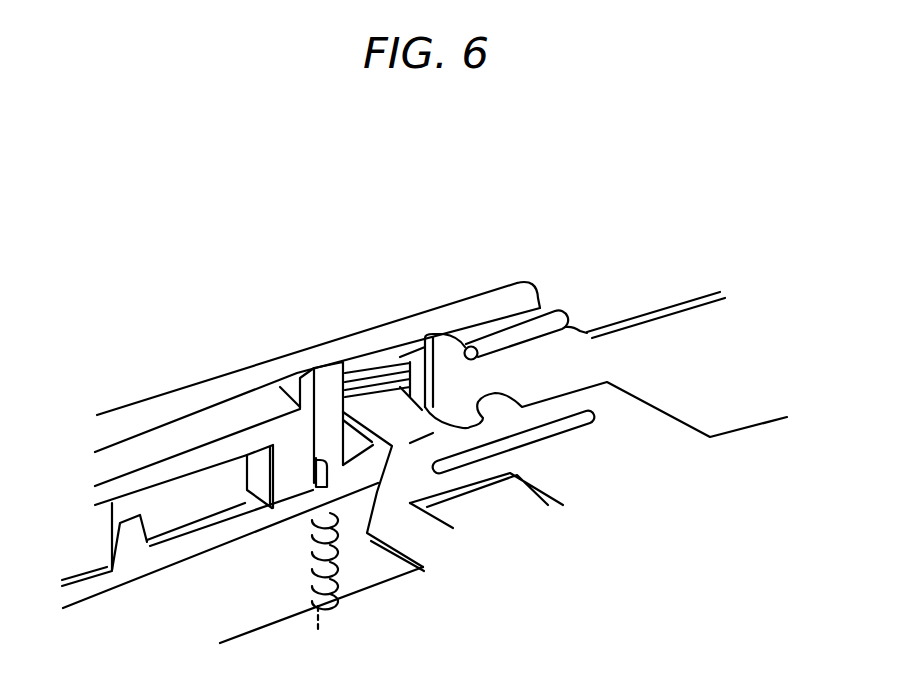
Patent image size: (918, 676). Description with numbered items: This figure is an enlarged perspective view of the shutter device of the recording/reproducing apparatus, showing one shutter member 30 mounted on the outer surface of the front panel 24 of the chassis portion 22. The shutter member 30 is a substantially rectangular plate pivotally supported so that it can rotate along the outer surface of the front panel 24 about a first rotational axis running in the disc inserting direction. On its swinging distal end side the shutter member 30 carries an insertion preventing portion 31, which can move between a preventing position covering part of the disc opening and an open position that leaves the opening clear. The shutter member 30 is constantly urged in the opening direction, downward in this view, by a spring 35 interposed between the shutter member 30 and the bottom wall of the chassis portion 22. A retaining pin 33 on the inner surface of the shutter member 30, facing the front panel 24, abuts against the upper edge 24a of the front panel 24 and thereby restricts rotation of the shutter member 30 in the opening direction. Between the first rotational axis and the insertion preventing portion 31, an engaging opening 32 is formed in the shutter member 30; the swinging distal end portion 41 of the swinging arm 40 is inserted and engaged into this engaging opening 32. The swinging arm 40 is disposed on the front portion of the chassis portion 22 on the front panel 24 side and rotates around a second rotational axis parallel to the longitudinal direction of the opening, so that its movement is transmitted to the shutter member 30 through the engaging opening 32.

The chassis portion 22 is at (173, 630).
The front panel 24 is at (670, 338).
The upper edge of the front panel 24a is at (500, 350).
The shutter member 30 is at (250, 364).
The insertion preventing portion 31 is at (553, 315).
The engaging opening 32 is at (367, 410).
The retaining pin 33 is at (476, 348).
The spring 35 is at (291, 570).
The swinging arm 40 is at (656, 463).
The swinging distal end portion 41 is at (388, 410).